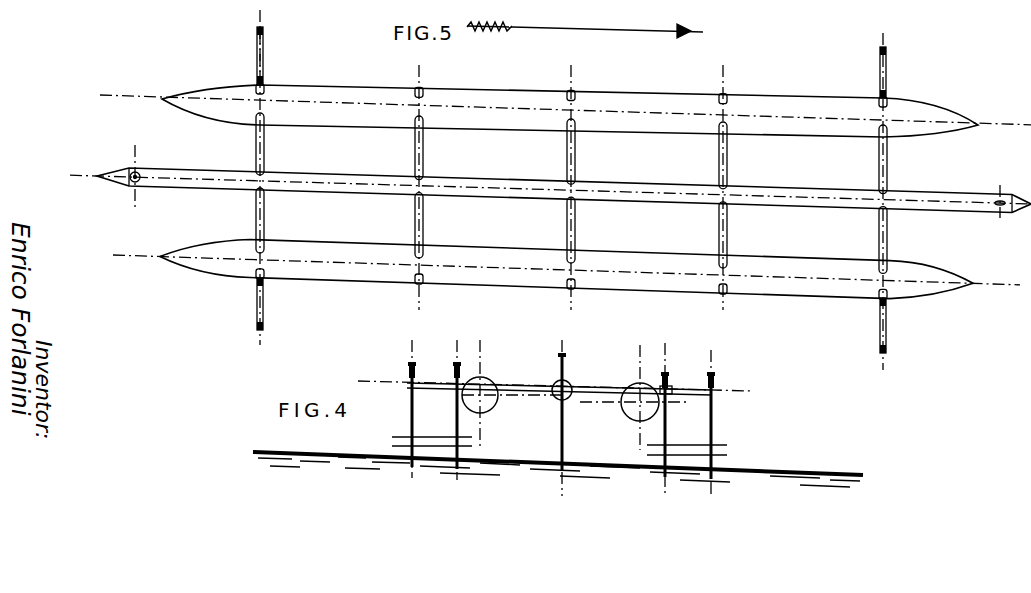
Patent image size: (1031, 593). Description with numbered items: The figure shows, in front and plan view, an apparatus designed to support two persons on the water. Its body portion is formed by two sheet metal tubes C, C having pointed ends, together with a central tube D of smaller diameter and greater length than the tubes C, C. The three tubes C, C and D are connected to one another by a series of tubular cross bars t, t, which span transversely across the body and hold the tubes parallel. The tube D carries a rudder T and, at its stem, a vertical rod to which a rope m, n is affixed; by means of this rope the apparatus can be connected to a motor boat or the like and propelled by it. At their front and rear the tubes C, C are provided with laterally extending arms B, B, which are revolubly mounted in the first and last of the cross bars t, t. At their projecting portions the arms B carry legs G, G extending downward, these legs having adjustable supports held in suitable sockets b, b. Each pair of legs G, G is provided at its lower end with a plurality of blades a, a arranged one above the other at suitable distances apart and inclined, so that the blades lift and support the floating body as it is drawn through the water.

In FIG. 5, the sheet metal tube C is at (565, 192).
In FIG. 4, the sheet metal tube C is at (574, 395).
In FIG. 5, the tube D is at (550, 183).
In FIG. 4, the tube D is at (568, 418).
In FIG. 5, the rudder T is at (123, 175).
In FIG. 5, the tubular cross bar t is at (575, 193).
In FIG. 4, the tubular cross bar t is at (555, 379).
In FIG. 5, the socket b is at (256, 31).
In FIG. 5, the rope m is at (571, 55).
In FIG. 5, the rope n is at (564, 338).
In FIG. 4, the leg G is at (553, 418).
In FIG. 4, the blade a is at (553, 449).
In FIG. 4, the laterally extending arm B is at (676, 382).